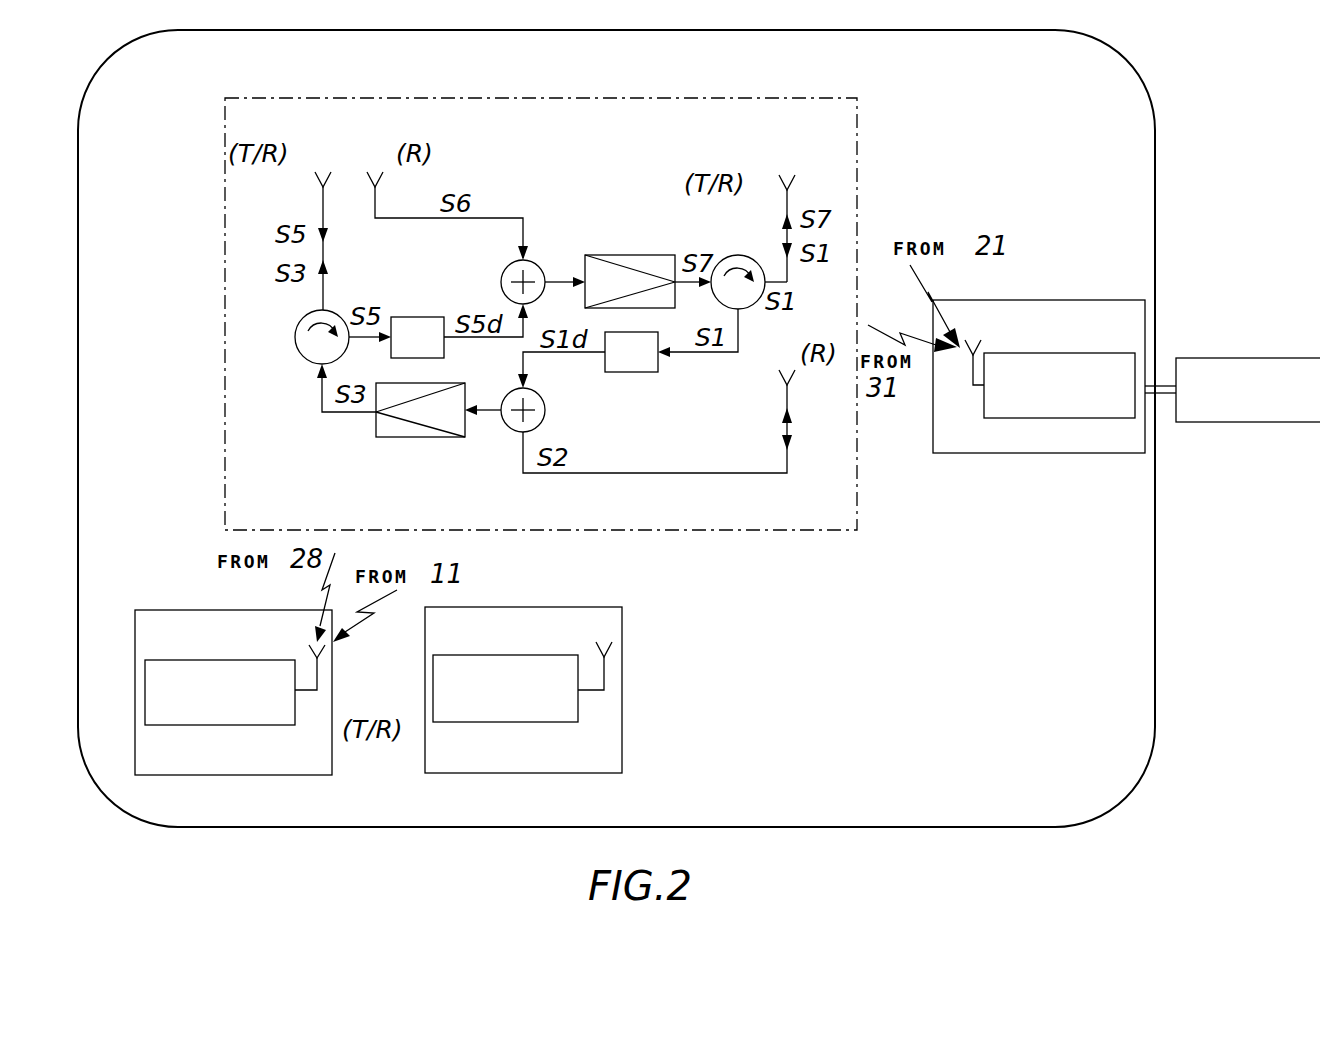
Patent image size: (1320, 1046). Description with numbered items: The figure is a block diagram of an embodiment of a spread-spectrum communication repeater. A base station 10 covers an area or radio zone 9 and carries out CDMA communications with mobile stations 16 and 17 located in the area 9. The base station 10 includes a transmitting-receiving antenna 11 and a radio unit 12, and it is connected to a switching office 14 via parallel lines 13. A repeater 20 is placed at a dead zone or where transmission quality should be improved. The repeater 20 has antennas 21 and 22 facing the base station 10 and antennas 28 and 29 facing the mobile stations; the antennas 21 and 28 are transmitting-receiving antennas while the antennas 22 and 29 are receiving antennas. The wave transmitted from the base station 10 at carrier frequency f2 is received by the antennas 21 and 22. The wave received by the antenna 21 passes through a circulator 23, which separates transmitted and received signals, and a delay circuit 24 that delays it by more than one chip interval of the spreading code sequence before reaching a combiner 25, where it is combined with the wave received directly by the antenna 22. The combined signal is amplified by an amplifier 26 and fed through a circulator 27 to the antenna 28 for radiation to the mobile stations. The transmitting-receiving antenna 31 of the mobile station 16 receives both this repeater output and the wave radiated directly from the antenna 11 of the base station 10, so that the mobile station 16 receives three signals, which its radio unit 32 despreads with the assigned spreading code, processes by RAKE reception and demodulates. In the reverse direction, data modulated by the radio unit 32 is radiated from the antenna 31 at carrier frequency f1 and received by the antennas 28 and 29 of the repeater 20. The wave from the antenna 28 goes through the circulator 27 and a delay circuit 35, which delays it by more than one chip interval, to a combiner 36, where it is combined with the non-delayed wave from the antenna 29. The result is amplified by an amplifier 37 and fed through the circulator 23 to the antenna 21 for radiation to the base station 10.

The area (radio zone) 9 is at (1155, 237).
The base station 10 is at (1040, 453).
The transmitting-receiving antenna 11 is at (975, 340).
The radio unit 12 is at (1072, 353).
The parallel lines 13 is at (1172, 385).
The switching office 14 is at (1218, 422).
The mobile station 16 is at (192, 610).
The mobile station 17 is at (622, 714).
The repeater 20 is at (415, 98).
The antenna for the base station 21 is at (785, 175).
The antenna for the base station 22 is at (787, 370).
The circulator 23 is at (745, 258).
The delay circuit 24 is at (650, 372).
The combiner 25 is at (537, 398).
The amplifier 26 is at (405, 437).
The circulator 27 is at (295, 333).
The antenna for mobile stations 28 is at (318, 170).
The antenna for mobile stations 29 is at (375, 172).
The transmitting-receiving antenna 31 is at (332, 664).
The radio unit 32 is at (262, 660).
The delay circuit 35 is at (432, 317).
The combiner 36 is at (537, 265).
The amplifier 37 is at (655, 255).